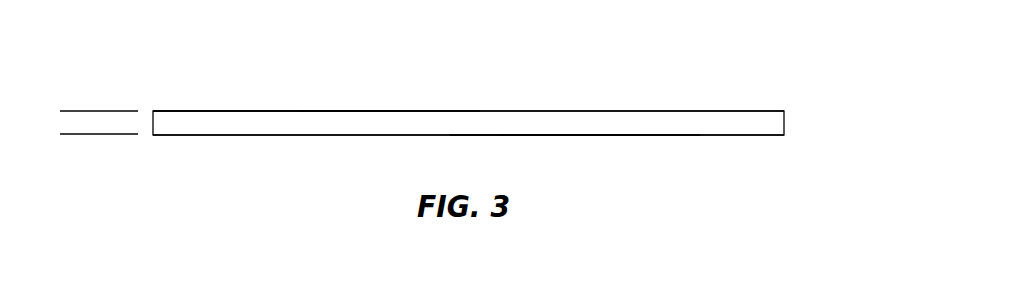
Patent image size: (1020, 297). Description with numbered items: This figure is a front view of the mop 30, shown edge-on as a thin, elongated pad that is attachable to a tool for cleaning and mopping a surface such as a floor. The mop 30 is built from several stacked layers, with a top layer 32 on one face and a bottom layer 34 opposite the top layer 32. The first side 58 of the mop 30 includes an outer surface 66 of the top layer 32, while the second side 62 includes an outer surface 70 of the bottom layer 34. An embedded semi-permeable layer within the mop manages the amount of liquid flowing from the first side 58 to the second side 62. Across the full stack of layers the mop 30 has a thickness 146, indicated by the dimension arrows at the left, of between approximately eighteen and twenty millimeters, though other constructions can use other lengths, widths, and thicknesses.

The mop 30 is at (812, 106).
The top layer 32 is at (544, 104).
The bottom layer 34 is at (698, 141).
The first side 58 is at (318, 94).
The second side 62 is at (543, 141).
The outer surface 66 is at (385, 110).
The outer surface 70 is at (590, 137).
The thickness 146 is at (84, 182).